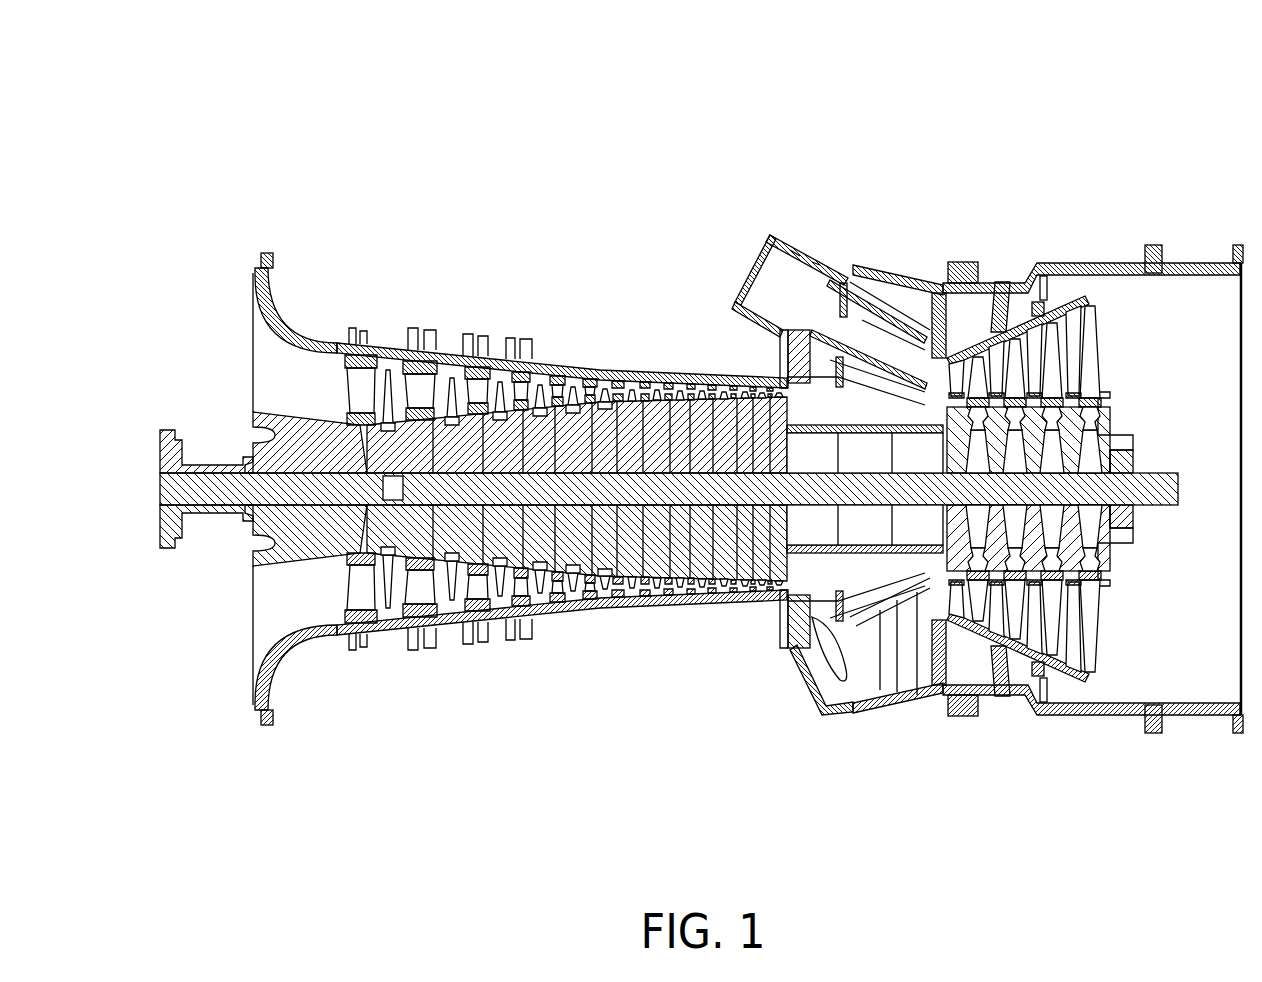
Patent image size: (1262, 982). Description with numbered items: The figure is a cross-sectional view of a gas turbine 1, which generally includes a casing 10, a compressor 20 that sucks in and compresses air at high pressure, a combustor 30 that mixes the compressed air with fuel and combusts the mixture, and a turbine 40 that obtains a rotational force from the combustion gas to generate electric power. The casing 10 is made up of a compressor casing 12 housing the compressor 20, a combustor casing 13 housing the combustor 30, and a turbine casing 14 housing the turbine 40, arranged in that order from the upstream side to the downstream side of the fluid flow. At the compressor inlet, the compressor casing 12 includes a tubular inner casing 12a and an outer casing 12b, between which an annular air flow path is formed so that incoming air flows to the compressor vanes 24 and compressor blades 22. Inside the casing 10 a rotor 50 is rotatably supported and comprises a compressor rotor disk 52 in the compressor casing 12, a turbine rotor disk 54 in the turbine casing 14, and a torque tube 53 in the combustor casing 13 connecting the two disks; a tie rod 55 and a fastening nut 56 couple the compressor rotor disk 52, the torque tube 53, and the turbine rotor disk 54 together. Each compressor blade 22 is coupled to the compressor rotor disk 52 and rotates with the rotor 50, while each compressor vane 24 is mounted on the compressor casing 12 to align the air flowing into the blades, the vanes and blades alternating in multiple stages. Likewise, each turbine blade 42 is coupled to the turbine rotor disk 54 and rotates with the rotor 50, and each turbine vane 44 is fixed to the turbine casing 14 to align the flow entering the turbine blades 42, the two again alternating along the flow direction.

The gas turbine 1 is at (701, 467).
The casing 10 is at (711, 379).
The compressor casing 12 is at (552, 416).
The inner casing 12a is at (283, 417).
The outer casing 12b is at (282, 308).
The combustor casing 13 is at (848, 268).
The turbine casing 14 is at (1087, 420).
The compressor 20 is at (564, 413).
The compressor blade 22 is at (478, 333).
The compressor vane 24 is at (420, 387).
The combustor 30 is at (762, 272).
The turbine 40 is at (1051, 406).
The turbine blade 42 is at (1083, 347).
The turbine vane 44 is at (1060, 340).
The rotor 50 is at (669, 650).
The compressor rotor disk 52 is at (593, 617).
The torque tube 53 is at (863, 522).
The turbine rotor disk 54 is at (1037, 523).
The tie rod 55 is at (700, 607).
The fastening nut 56 is at (1114, 624).